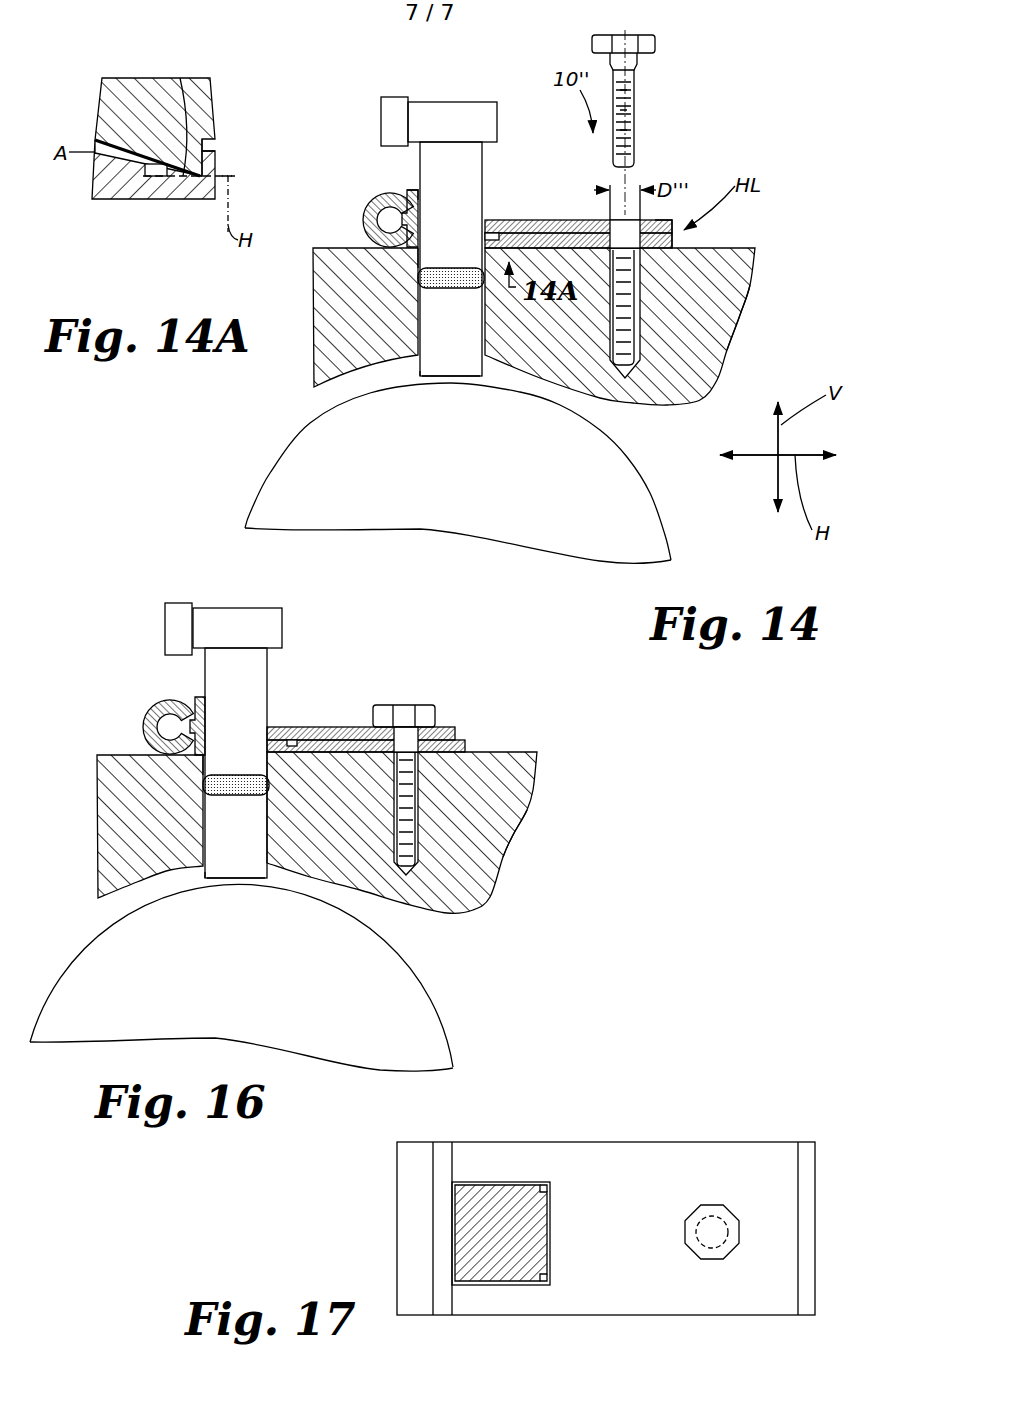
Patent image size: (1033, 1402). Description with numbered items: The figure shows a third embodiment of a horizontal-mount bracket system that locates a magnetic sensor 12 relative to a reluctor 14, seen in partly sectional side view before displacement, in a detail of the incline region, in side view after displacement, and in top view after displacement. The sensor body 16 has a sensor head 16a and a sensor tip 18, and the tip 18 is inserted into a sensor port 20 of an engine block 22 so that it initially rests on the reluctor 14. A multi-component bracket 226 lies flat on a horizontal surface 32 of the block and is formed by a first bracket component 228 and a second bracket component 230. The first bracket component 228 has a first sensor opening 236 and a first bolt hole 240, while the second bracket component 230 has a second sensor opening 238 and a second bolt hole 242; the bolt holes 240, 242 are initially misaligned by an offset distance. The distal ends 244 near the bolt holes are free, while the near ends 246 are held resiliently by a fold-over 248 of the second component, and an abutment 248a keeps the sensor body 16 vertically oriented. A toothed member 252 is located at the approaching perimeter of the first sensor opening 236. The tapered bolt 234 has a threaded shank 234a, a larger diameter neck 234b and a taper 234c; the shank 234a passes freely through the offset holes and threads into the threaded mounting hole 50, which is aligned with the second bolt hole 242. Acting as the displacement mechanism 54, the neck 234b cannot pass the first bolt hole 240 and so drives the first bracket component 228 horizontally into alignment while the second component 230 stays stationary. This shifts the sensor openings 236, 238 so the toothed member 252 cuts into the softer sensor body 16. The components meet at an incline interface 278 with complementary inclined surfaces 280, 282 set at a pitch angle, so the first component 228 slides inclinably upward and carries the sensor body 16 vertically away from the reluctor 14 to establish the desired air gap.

In FIG. 14, the magnetic sensor 12 is at (437, 231).
In FIG. 16, the magnetic sensor 12 is at (219, 743).
In FIG. 14, the reluctor 14 is at (656, 490).
In FIG. 16, the reluctor 14 is at (438, 1000).
In FIG. 14, the sensor body 16 is at (484, 170).
In FIG. 16, the sensor body 16 is at (268, 682).
In FIG. 17, the sensor body 16 is at (500, 1185).
In FIG. 14, the sensor head 16a is at (467, 100).
In FIG. 16, the sensor head 16a is at (250, 606).
In FIG. 14, the sensor tip 18 is at (428, 380).
In FIG. 16, the sensor tip 18 is at (211, 882).
In FIG. 14, the sensor port 20 is at (420, 330).
In FIG. 16, the sensor port 20 is at (208, 845).
In FIG. 14, the engine block 22 is at (730, 378).
In FIG. 16, the engine block 22 is at (498, 882).
In FIG. 14, the flat horizontal surface 32 is at (338, 247).
In FIG. 16, the flat horizontal surface 32 is at (118, 754).
In FIG. 14, the threaded mounting hole 50 is at (700, 300).
In FIG. 16, the threaded mounting hole 50 is at (490, 810).
In FIG. 14, the displacement mechanism 54 is at (643, 142).
In FIG. 14, the multi-component bracket 226 is at (551, 222).
In FIG. 16, the multi-component bracket 226 is at (333, 728).
In FIG. 14A, the first bracket component 228 is at (130, 78).
In FIG. 14, the first bracket component 228 is at (563, 238).
In FIG. 16, the first bracket component 228 is at (348, 740).
In FIG. 14A, the second bracket component 230 is at (190, 200).
In FIG. 14, the second bracket component 230 is at (601, 168).
In FIG. 16, the second bracket component 230 is at (364, 672).
In FIG. 14, the tapered bolt 234 is at (633, 184).
In FIG. 17, the tapered bolt 234 is at (706, 1205).
In FIG. 14, the threaded shank 234a is at (636, 120).
In FIG. 14, the larger diameter neck 234b is at (610, 70).
In FIG. 14, the taper 234c is at (640, 68).
In FIG. 16, the first sensor opening 236 is at (205, 756).
In FIG. 17, the first sensor opening 236 is at (471, 1192).
In FIG. 16, the second sensor opening 238 is at (212, 790).
In FIG. 14, the first bolt hole 240 is at (618, 219).
In FIG. 16, the first bolt hole 240 is at (403, 726).
In FIG. 14, the second bolt hole 242 is at (617, 280).
In FIG. 16, the second bolt hole 242 is at (400, 780).
In FIG. 14, the distal ends 244 is at (660, 217).
In FIG. 14, the near ends 246 is at (386, 192).
In FIG. 16, the near ends 246 is at (166, 700).
In FIG. 14, the resiliently deformable fold-over 248 is at (366, 216).
In FIG. 16, the resiliently deformable fold-over 248 is at (192, 712).
In FIG. 14, the abutment 248a is at (410, 190).
In FIG. 14, the toothed member 252 is at (452, 236).
In FIG. 16, the toothed member 252 is at (263, 735).
In FIG. 17, the toothed member 252 is at (549, 1200).
In FIG. 14A, the incline interface 278 is at (204, 190).
In FIG. 14A, the inclined surface 280 is at (165, 178).
In FIG. 14, the inclined surface 280 is at (402, 252).
In FIG. 14A, the inclined surface 282 is at (181, 80).
In FIG. 14, the inclined surface 282 is at (451, 265).